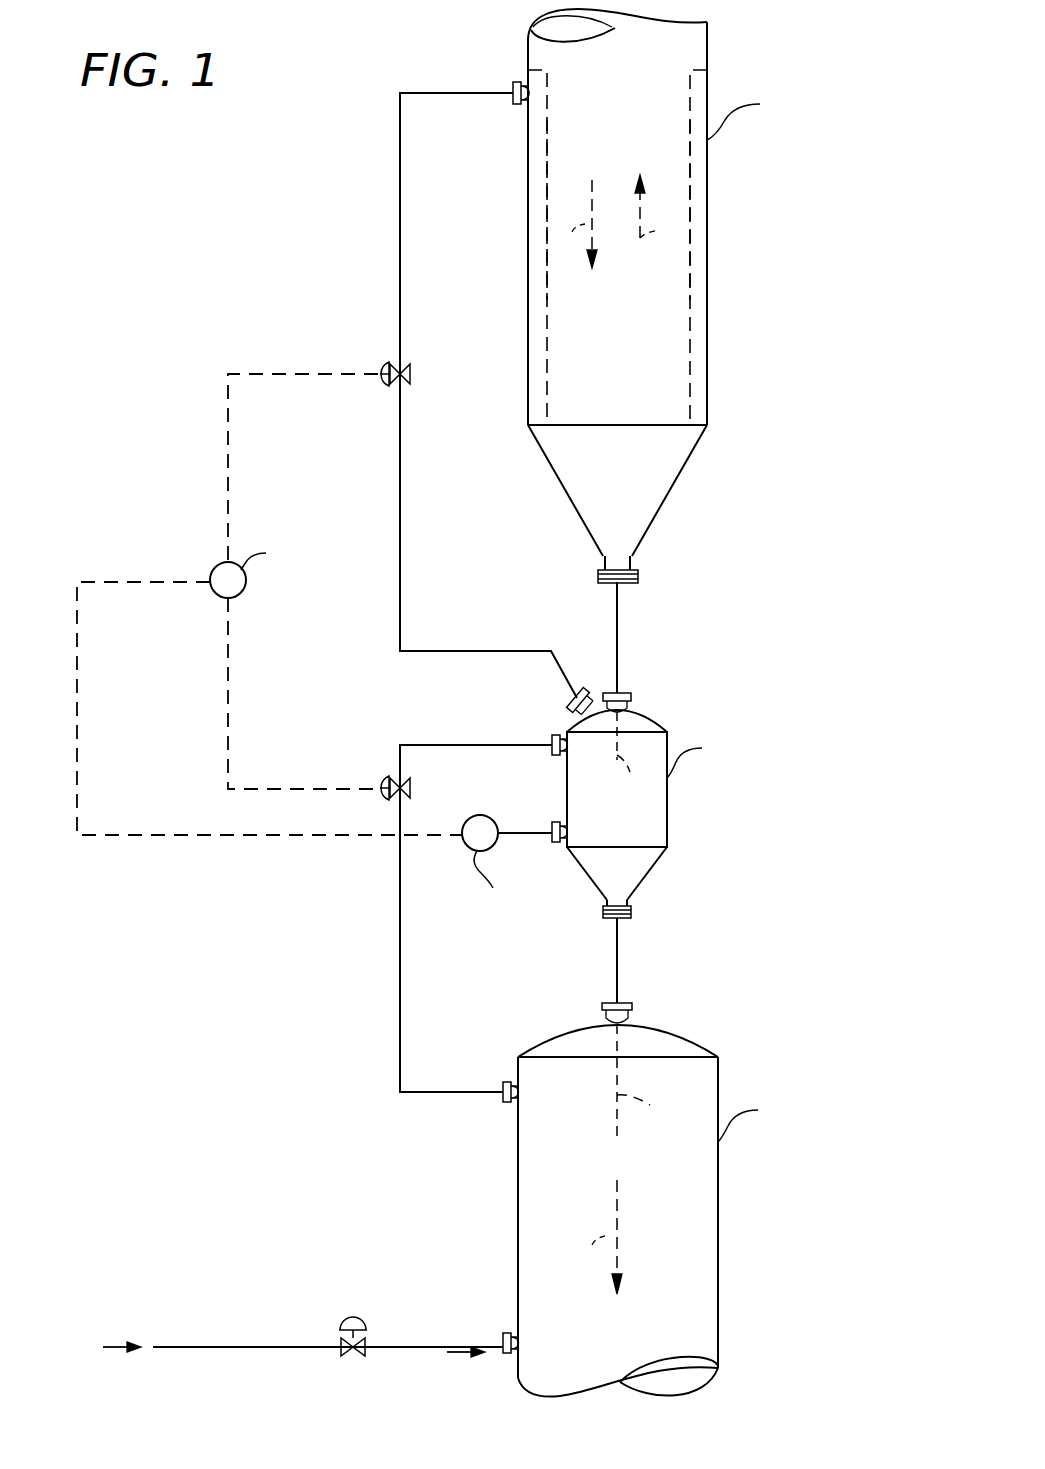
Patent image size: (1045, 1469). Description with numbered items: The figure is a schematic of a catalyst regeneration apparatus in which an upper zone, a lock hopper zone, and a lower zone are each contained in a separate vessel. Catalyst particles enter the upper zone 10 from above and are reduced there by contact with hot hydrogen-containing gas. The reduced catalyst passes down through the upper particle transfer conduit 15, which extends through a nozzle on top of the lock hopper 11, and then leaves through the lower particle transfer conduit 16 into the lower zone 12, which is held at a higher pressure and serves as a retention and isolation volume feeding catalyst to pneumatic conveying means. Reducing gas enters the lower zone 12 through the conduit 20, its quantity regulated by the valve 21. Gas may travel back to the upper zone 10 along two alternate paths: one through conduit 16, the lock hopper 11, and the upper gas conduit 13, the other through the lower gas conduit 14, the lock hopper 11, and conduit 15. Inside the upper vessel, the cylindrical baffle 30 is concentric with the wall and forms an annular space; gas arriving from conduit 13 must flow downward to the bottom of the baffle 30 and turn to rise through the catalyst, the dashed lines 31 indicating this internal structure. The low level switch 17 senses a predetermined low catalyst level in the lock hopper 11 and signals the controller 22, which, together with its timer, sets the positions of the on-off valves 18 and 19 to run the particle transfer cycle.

The upper zone vessel 10 is at (707, 327).
The lock hopper 11 is at (667, 820).
The lower zone vessel 12 is at (718, 1262).
The upper gas conduit 13 is at (420, 93).
The lower gas conduit 14 is at (454, 745).
The upper particle transfer conduit 15 is at (617, 648).
The lower particle transfer conduit 16 is at (617, 973).
The low level switch 17 is at (484, 815).
The valve 18 is at (382, 374).
The valve 19 is at (382, 788).
The conduit 20 is at (210, 1350).
The valve 21 is at (346, 1329).
The controller 22 is at (216, 593).
The cylindrical baffle 30 is at (547, 350).
The annular passage of upper zone 31 is at (547, 218).